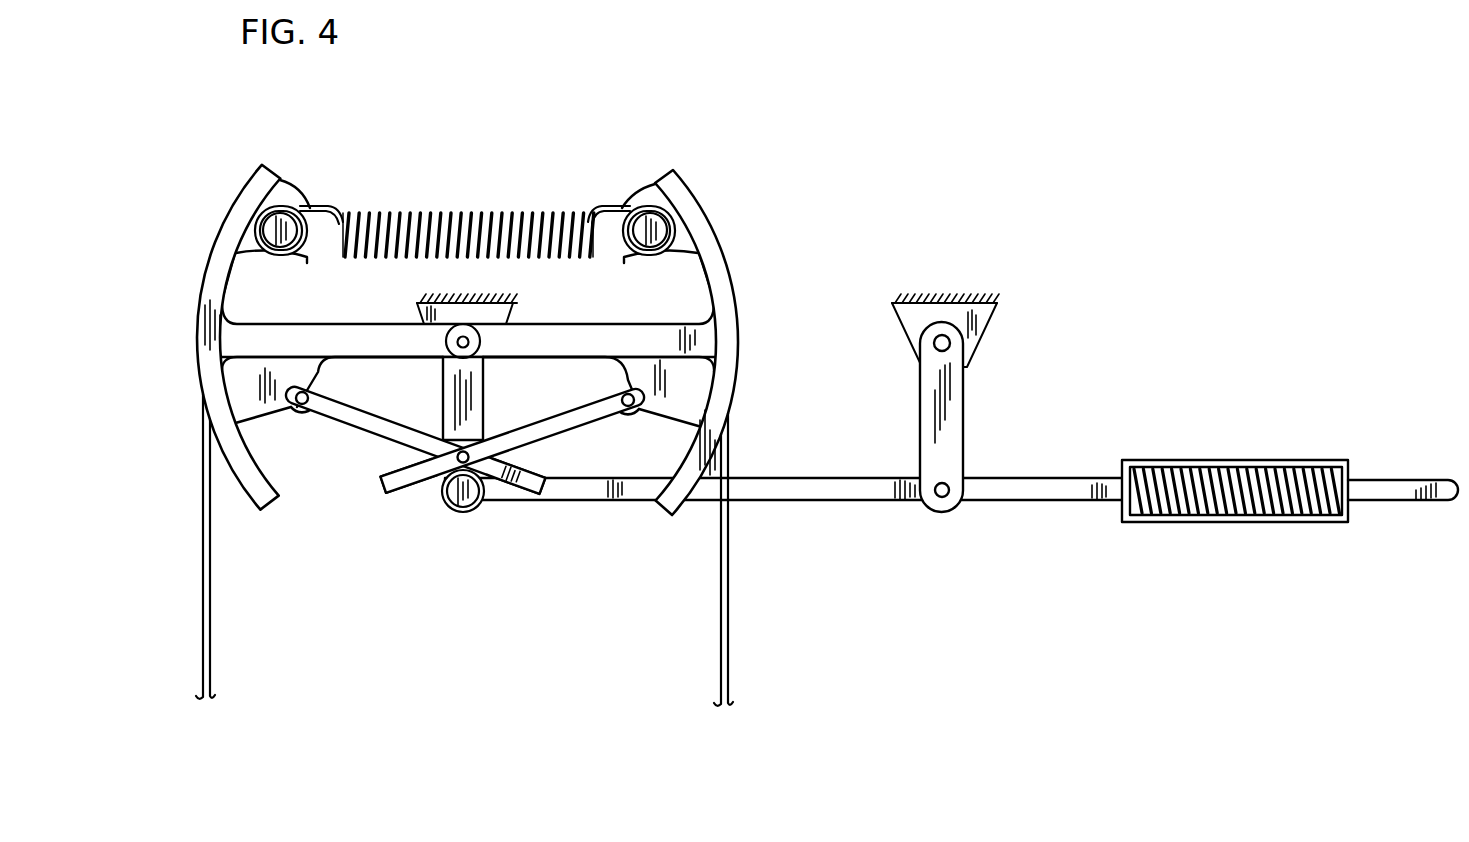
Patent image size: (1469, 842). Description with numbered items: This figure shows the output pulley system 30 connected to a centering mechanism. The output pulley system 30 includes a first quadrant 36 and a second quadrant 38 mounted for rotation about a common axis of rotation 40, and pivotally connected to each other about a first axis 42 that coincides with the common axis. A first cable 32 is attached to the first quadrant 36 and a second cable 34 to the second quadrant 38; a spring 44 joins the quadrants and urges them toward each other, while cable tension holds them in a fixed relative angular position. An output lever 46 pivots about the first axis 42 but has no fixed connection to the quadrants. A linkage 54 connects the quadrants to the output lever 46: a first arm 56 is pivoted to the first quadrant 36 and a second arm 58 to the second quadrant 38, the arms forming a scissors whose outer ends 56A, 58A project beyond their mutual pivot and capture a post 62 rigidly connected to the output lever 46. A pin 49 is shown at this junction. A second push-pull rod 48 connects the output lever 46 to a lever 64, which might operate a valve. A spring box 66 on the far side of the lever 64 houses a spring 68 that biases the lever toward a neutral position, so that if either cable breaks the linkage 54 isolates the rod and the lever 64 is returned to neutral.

The output pulley system 30 is at (742, 98).
The first cable 32 is at (203, 617).
The second cable 34 is at (728, 646).
The first quadrant 36 is at (240, 210).
The second quadrant 38 is at (697, 212).
The common axis of rotation 40 is at (482, 342).
The first axis 42 is at (458, 339).
The spring 44 is at (462, 210).
The output lever 46 is at (445, 383).
The second push-pull rod 48 is at (812, 494).
The pin 49 is at (472, 508).
The linkage 54 is at (455, 464).
The first arm 56 is at (430, 471).
The outer end of first arm 56A is at (527, 493).
The second arm 58 is at (463, 432).
The outer end of second arm 58A is at (390, 476).
The post 62 is at (464, 534).
The lever 64 is at (955, 422).
The spring box 66 is at (1290, 497).
The spring 68 is at (1262, 512).